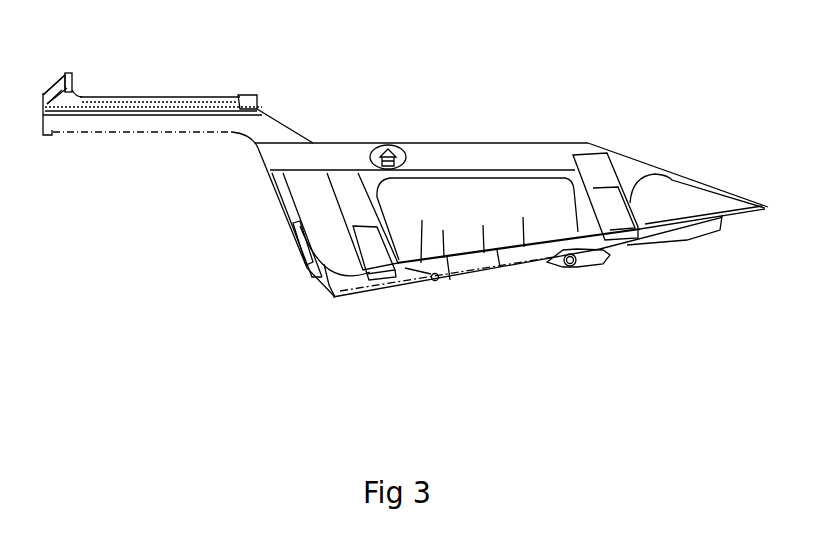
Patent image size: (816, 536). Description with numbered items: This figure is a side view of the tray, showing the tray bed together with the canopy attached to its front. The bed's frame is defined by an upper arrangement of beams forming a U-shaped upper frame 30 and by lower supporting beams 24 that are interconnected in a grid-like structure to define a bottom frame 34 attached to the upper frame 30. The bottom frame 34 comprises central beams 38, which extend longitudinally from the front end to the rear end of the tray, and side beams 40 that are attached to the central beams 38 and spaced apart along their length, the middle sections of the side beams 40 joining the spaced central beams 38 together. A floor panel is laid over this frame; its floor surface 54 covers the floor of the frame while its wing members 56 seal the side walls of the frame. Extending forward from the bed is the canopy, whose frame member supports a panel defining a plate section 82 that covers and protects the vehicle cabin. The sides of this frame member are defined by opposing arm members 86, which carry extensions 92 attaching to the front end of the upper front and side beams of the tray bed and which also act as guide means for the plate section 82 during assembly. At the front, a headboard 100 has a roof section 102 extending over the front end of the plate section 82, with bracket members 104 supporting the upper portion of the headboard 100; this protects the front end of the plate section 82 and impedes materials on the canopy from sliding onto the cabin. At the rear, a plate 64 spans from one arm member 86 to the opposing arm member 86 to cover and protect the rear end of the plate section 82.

The lower supporting beams 24 is at (352, 192).
The upper frame 30 is at (485, 150).
The bottom frame 34 is at (473, 263).
The central beams 38 is at (522, 256).
The side beams 40 is at (597, 167).
The floor surface 54 is at (760, 203).
The wing members 56 is at (398, 278).
The plate 64 is at (255, 98).
The plate section 82 is at (209, 98).
The arm members 86 is at (170, 120).
The extensions 92 is at (276, 131).
The headboard 100 is at (62, 85).
The roof section 102 is at (70, 73).
The bracket members 104 is at (67, 98).